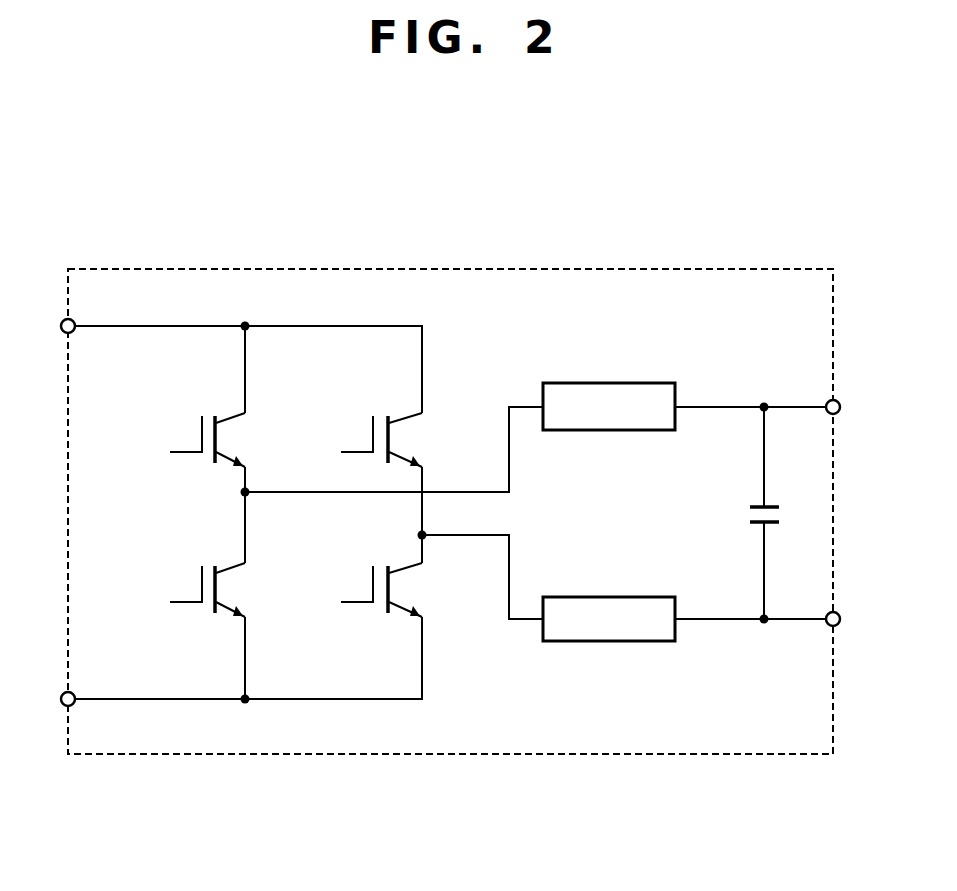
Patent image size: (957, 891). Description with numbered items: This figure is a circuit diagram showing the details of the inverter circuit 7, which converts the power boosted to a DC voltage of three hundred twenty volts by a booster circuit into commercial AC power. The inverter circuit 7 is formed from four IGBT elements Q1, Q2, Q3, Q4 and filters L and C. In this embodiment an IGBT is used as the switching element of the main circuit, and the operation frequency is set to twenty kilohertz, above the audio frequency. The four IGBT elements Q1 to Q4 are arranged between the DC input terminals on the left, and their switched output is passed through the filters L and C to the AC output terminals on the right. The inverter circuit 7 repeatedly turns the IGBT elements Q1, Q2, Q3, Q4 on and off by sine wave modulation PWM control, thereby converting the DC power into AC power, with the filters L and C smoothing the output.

The inverter circuit 7 is at (412, 268).
The IGBT element Q1 is at (205, 429).
The IGBT element Q2 is at (205, 579).
The IGBT element Q3 is at (380, 429).
The IGBT element Q4 is at (380, 579).
The filter L is at (609, 512).
The filter C is at (770, 501).